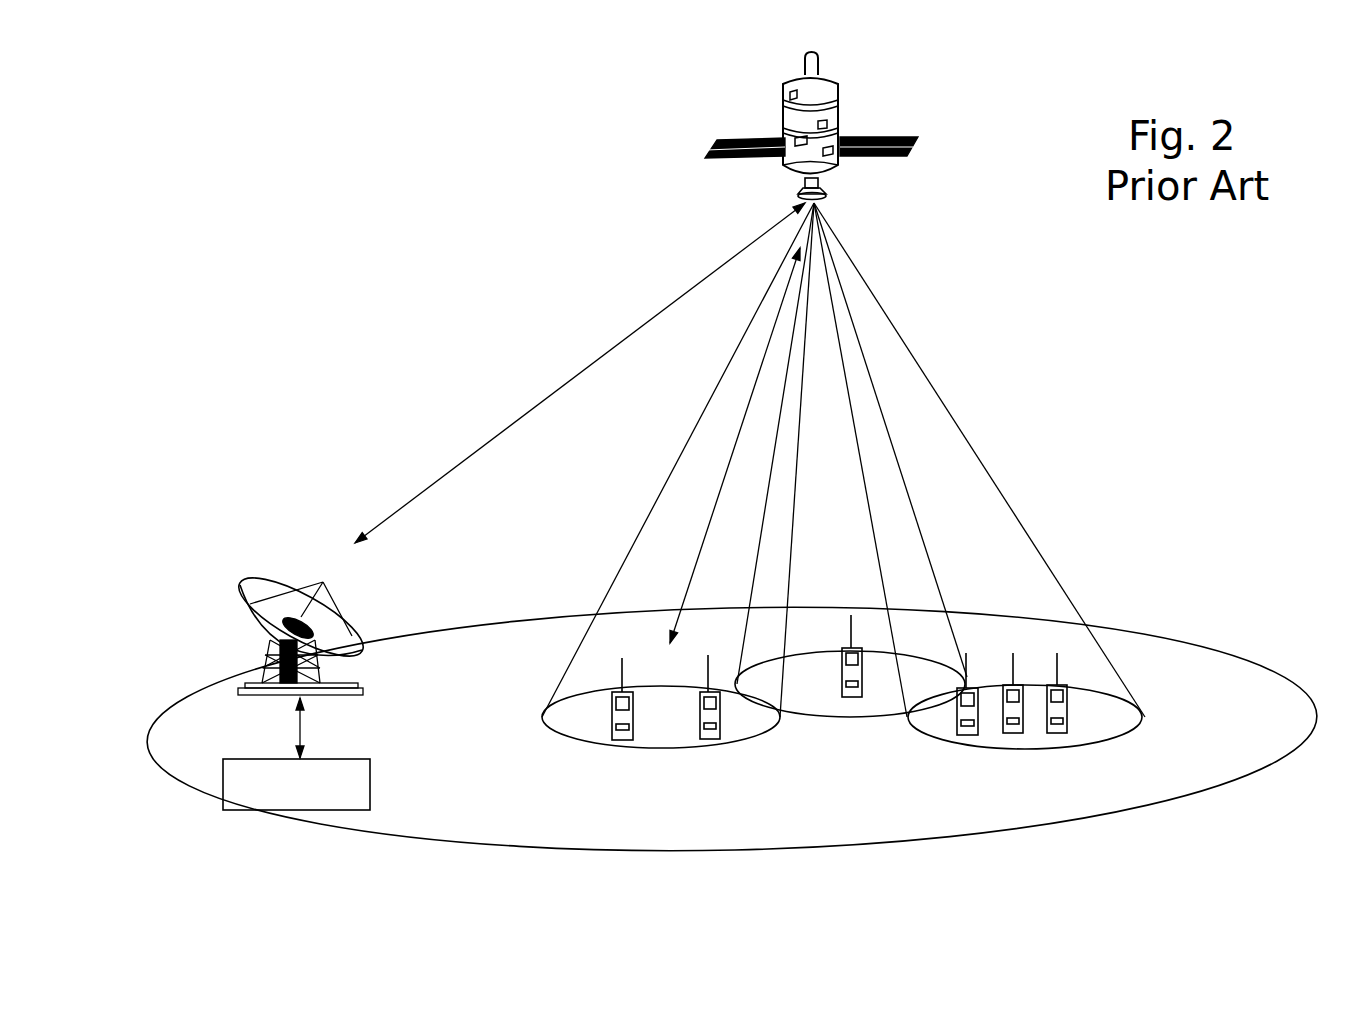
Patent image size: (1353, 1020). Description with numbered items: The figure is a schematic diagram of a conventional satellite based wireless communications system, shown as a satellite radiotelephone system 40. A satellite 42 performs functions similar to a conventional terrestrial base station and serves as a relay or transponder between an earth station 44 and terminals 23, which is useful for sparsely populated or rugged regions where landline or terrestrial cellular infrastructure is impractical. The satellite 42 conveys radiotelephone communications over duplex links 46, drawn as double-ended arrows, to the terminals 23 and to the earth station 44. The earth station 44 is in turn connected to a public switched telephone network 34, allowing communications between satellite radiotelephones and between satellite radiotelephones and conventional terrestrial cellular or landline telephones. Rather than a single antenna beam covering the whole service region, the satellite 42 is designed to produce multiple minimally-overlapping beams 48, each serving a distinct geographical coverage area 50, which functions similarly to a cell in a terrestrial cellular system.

The terminal 23 is at (609, 715).
The public switched telephone network 34 is at (373, 783).
The satellite radiotelephone system 40 is at (530, 170).
The satellite 42 is at (943, 124).
The earth station 44 is at (260, 700).
The duplex link 46 is at (520, 380).
The beam 48 is at (667, 428).
The coverage area 50 is at (668, 750).